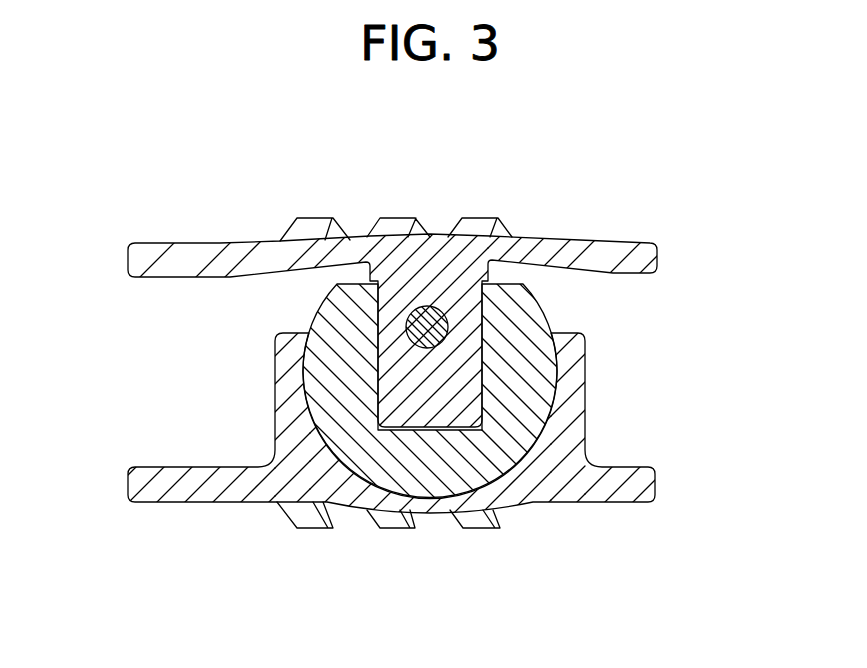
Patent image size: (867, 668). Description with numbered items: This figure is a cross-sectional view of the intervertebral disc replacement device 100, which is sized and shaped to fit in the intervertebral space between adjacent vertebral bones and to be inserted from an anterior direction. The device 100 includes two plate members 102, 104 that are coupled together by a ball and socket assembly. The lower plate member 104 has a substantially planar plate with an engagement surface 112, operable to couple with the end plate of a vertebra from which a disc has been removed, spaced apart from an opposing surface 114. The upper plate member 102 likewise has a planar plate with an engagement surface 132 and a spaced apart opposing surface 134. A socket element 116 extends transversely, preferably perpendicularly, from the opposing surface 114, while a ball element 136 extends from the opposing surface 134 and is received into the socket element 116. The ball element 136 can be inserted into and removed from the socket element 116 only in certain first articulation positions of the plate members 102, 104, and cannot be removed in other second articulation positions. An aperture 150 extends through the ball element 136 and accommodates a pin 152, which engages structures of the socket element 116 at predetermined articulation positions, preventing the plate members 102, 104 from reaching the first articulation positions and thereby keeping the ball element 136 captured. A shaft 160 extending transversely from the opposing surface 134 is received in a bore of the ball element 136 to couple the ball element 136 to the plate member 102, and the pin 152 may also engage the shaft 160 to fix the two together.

The intervertebral disc replacement device 100 is at (449, 134).
The plate member 102 is at (657, 250).
The plate member 104 is at (657, 470).
The engagement surface 112 is at (632, 502).
The opposing surface 114 is at (162, 455).
The socket element 116 is at (587, 387).
The engagement surface 132 is at (162, 235).
The opposing surface 134 is at (637, 280).
The ball element 136 is at (322, 390).
The aperture 150 is at (445, 305).
The pin 152 is at (425, 328).
The shaft 160 is at (462, 387).